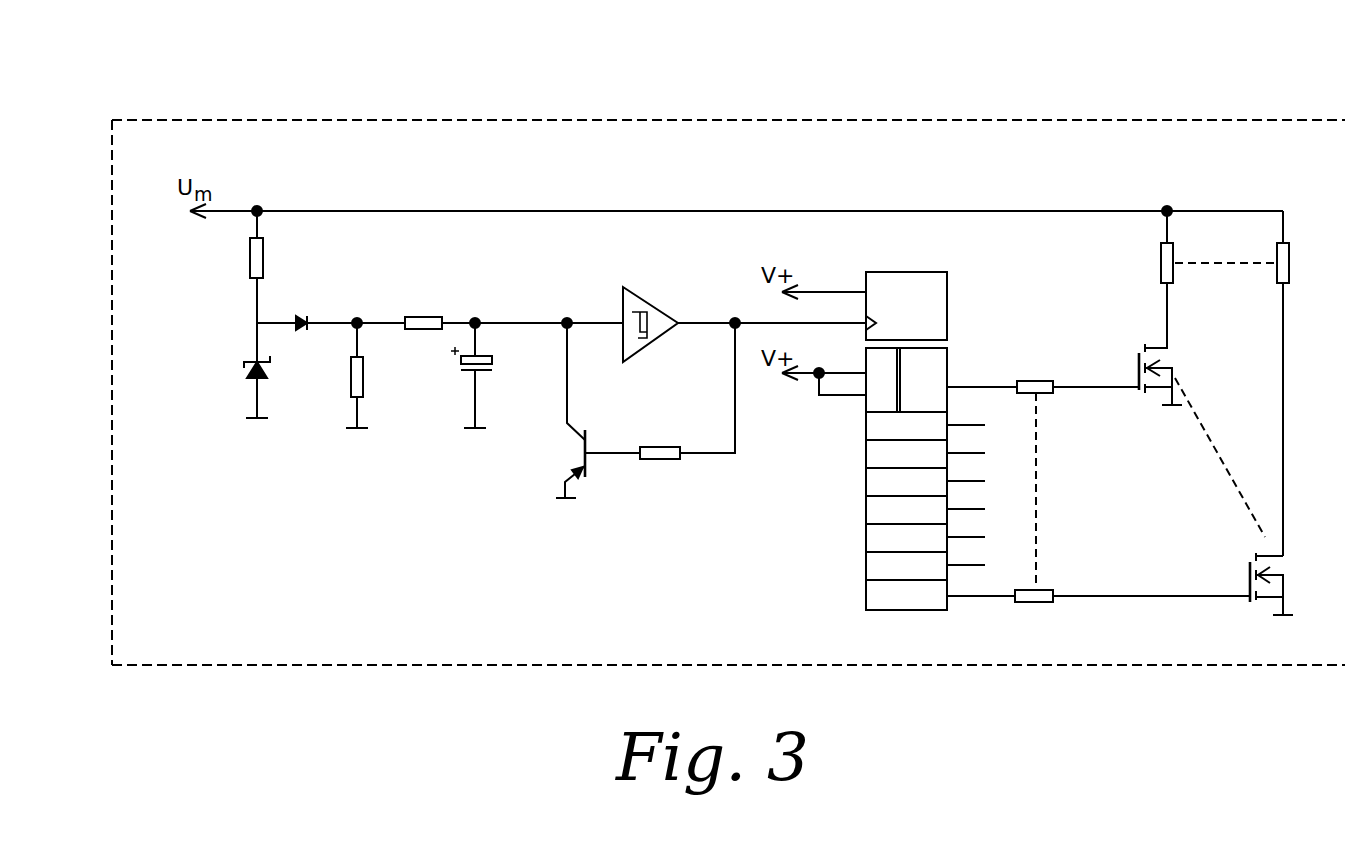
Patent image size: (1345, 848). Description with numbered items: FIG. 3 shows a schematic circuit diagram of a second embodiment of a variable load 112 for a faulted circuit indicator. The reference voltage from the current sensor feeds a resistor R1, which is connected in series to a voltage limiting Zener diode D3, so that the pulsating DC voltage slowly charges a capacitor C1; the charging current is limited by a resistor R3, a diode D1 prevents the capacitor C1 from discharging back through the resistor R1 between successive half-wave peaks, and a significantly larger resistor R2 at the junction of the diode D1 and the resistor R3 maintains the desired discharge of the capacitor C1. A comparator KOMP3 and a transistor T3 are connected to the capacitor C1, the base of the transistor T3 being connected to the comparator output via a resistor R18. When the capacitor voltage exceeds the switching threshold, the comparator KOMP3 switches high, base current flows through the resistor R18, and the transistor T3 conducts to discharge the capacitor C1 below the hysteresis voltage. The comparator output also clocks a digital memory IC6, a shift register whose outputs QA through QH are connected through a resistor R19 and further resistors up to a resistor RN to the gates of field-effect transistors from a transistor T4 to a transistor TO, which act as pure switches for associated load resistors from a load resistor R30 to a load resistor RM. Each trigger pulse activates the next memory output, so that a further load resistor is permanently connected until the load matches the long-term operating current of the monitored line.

The variable load 112 is at (576, 118).
The resistor R1 is at (273, 267).
The diode D1 is at (307, 310).
The Zener diode D3 is at (274, 370).
The resistor R2 is at (370, 375).
The resistor R3 is at (416, 311).
The capacitor C1 is at (488, 375).
The comparator KOMP3 is at (744, 320).
The transistor T3 is at (577, 410).
The resistor R18 is at (660, 391).
The digital memory IC6 is at (925, 427).
The resistor R19 is at (1043, 375).
The field-effect transistor T4 is at (1142, 344).
The load resistor R30 is at (1219, 247).
The load resistor RM is at (1303, 383).
The resistor RN is at (1098, 582).
The field-effect transistor TO is at (1249, 584).